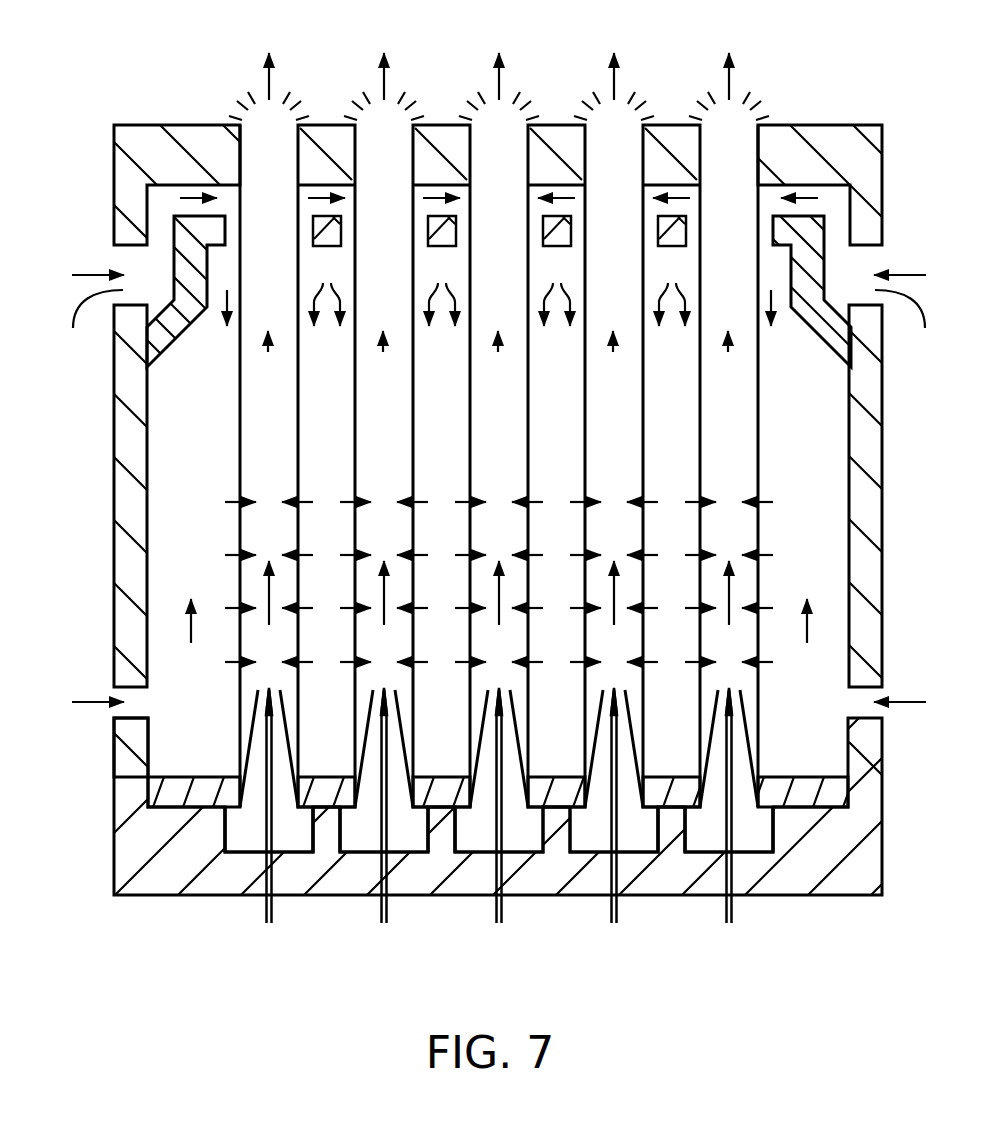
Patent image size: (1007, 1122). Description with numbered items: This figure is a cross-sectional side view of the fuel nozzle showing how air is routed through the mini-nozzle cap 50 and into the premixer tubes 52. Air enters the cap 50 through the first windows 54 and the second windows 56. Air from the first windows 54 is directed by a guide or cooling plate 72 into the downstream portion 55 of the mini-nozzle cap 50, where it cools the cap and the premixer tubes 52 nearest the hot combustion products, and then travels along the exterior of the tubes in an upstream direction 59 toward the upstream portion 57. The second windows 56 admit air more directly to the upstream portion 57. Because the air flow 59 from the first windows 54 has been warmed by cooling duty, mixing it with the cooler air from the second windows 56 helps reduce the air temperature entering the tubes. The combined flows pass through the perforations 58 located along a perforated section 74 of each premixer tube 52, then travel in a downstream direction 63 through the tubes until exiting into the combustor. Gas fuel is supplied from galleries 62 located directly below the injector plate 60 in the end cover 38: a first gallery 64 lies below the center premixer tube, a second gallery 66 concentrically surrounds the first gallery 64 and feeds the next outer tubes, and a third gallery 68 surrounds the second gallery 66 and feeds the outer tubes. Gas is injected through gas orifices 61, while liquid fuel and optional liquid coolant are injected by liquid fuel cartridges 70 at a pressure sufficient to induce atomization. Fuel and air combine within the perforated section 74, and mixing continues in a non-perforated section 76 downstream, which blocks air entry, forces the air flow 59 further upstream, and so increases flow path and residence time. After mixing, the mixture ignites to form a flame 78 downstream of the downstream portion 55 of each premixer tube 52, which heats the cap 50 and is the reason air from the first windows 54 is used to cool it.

The end cover 38 is at (174, 890).
The mini-nozzle cap 50 is at (803, 125).
The premixer tubes 52 is at (700, 709).
The first windows 54 is at (499, 317).
The downstream portion 55 is at (84, 159).
The second windows 56 is at (873, 692).
The upstream portion 57 is at (83, 746).
The perforations 58 is at (773, 555).
The air flow in upstream direction 59 is at (227, 300).
The injector plate 60 is at (113, 792).
The gas orifices 61 is at (711, 735).
The galleries 62 is at (707, 833).
The downstream direction 63 is at (730, 352).
The first gallery 64 is at (477, 837).
The second gallery 66 is at (635, 835).
The third gallery 68 is at (752, 830).
The liquid fuel cartridges 70 is at (728, 925).
The cooling plate 72 is at (824, 257).
The perforated section 74 is at (700, 575).
The non-perforated section 76 is at (700, 424).
The flame 78 is at (729, 85).